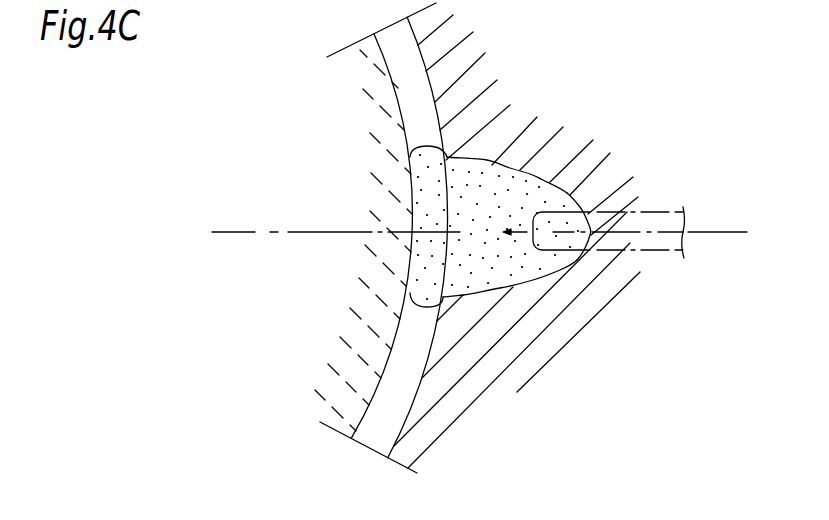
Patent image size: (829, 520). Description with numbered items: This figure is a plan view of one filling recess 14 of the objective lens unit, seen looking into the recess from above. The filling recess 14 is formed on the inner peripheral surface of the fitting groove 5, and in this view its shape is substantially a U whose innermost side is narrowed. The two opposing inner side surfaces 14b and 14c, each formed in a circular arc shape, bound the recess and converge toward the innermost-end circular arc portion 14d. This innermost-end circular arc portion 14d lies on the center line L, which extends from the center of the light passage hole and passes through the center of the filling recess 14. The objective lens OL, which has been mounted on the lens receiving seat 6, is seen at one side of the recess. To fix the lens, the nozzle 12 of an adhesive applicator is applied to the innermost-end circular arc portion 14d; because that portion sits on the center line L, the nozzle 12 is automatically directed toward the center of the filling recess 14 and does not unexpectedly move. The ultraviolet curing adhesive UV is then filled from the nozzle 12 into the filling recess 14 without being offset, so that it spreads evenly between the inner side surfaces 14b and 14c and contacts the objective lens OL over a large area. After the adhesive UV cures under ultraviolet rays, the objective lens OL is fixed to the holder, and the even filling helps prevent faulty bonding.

The fitting groove 5 is at (413, 402).
The lens receiving seat 6 is at (383, 427).
The nozzle 12 is at (670, 212).
The filling recess 14 is at (564, 186).
The inner side surface 14b is at (506, 170).
The inner side surface 14c is at (503, 288).
The innermost-end circular arc portion 14d is at (585, 241).
The objective lens OL is at (357, 104).
The ultraviolet curing adhesive UV is at (430, 267).
The center line L is at (727, 232).